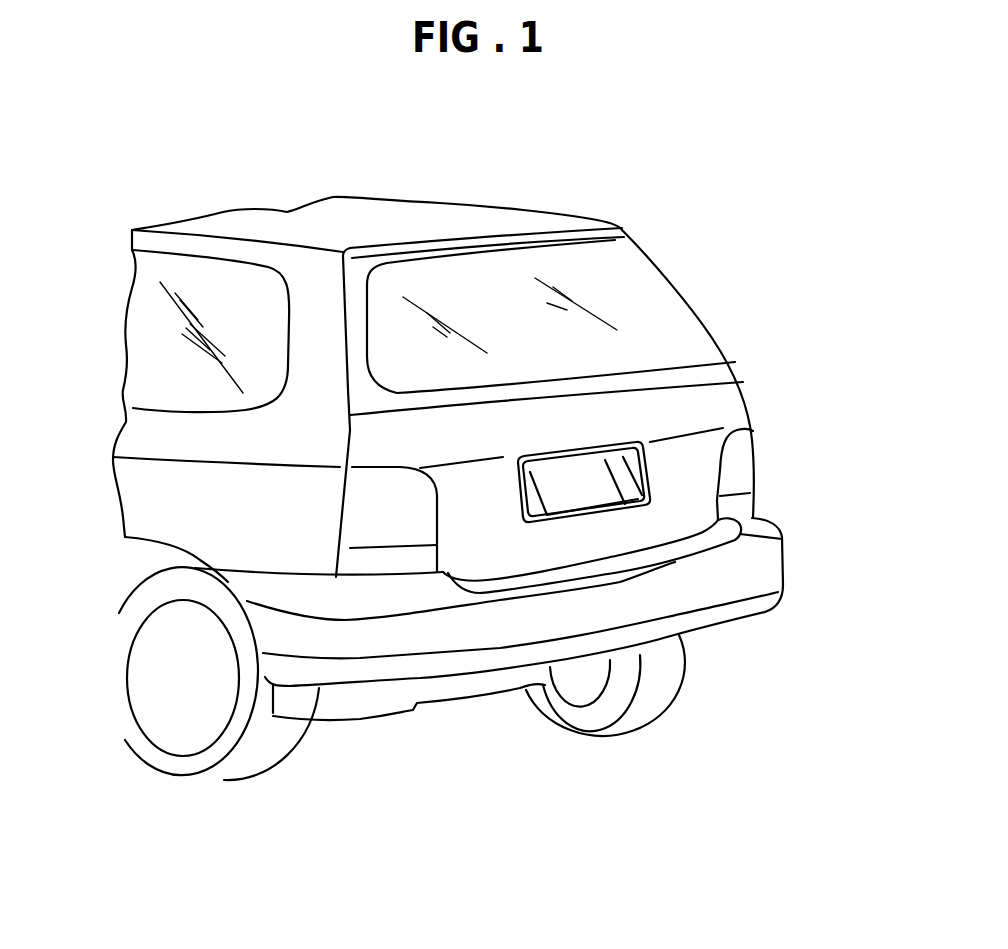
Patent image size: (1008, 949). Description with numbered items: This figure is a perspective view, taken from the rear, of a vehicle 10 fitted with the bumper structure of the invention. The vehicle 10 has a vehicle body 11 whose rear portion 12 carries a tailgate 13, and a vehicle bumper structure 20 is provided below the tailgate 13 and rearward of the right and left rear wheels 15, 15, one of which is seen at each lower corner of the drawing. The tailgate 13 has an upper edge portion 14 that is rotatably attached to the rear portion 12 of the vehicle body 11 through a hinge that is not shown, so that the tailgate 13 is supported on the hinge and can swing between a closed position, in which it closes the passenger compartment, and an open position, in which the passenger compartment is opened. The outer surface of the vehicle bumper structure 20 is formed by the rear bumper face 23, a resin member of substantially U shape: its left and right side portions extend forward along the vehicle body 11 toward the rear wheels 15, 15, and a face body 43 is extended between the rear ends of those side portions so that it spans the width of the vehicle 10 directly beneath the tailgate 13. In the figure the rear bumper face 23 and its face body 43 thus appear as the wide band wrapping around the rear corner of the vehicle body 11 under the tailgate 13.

The vehicle 10 is at (637, 193).
The vehicle body 11 is at (367, 208).
The rear portion 12 is at (298, 330).
The tailgate 13 is at (735, 397).
The upper edge portion 14 is at (507, 238).
The rear wheel 15 is at (153, 760).
The vehicle bumper structure 20 is at (783, 565).
The rear bumper face 23 is at (730, 595).
The face body 43 is at (490, 640).